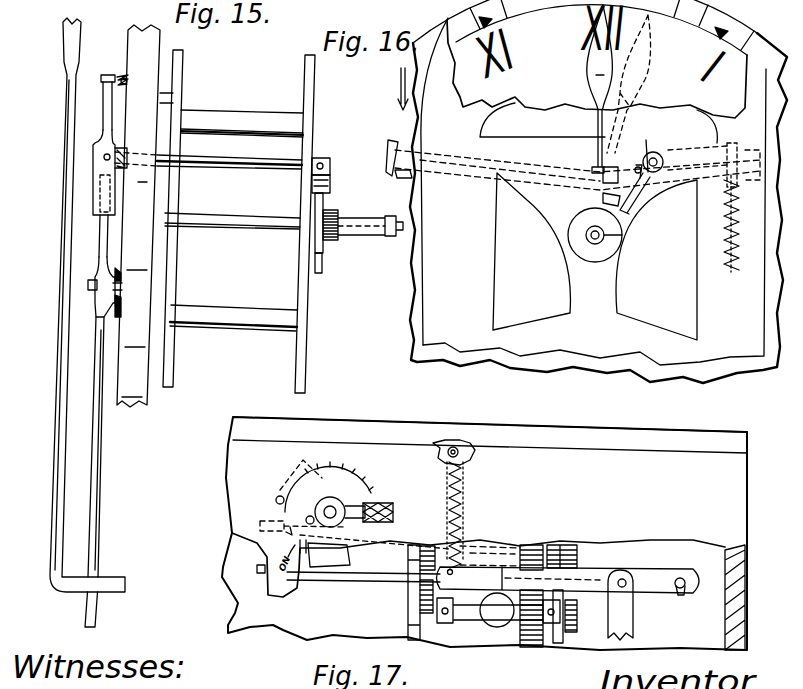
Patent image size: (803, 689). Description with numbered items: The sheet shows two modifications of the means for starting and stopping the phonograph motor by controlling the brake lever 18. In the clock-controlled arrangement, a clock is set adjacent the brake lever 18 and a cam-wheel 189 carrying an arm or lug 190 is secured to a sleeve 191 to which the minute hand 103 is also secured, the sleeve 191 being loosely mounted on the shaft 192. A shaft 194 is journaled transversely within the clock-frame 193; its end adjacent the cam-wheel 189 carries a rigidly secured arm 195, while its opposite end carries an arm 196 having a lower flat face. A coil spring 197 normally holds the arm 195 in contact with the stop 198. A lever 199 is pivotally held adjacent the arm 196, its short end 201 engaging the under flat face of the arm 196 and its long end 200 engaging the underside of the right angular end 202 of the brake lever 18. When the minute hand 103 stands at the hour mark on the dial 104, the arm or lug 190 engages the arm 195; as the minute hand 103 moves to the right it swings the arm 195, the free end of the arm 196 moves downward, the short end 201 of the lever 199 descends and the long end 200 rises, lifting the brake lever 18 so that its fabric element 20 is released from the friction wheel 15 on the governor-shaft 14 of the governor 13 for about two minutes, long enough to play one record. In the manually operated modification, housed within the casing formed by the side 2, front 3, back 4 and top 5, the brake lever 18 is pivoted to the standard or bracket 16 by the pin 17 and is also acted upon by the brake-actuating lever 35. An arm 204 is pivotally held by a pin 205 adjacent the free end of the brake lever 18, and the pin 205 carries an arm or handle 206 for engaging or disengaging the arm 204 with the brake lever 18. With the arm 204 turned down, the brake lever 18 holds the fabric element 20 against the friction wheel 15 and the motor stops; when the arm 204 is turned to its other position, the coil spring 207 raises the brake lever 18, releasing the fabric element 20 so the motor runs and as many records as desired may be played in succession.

In FIG. 15, the brake lever 18 is at (56, 373).
In FIG. 17, the brake lever 18 is at (484, 580).
In FIG. 15, the coil spring 197 is at (121, 75).
In FIG. 15, the arm 196 is at (105, 163).
In FIG. 15, the short end 201 is at (100, 236).
In FIG. 15, the lever 199 is at (95, 293).
In FIG. 15, the long end 200 is at (93, 494).
In FIG. 15, the right angular end 202 is at (114, 590).
In FIG. 16, the right angular end 202 is at (400, 168).
In FIG. 15, the shaft 194 is at (219, 161).
In FIG. 16, the shaft 194 is at (661, 154).
In FIG. 15, the shaft 192 is at (235, 219).
In FIG. 16, the shaft 192 is at (568, 235).
In FIG. 15, the clock-frame 193 is at (303, 290).
In FIG. 15, the arm 195 is at (330, 176).
In FIG. 16, the arm 195 is at (636, 197).
In FIG. 15, the stop 198 is at (329, 189).
In FIG. 16, the stop 198 is at (633, 172).
In FIG. 15, the cam-wheel 189 is at (322, 237).
In FIG. 16, the cam-wheel 189 is at (596, 263).
In FIG. 15, the sleeve 191 is at (386, 238).
In FIG. 16, the sleeve 191 is at (623, 235).
In FIG. 15, the arm or lug 190 is at (323, 268).
In FIG. 16, the arm or lug 190 is at (613, 199).
In FIG. 16, the minute hand 103 is at (598, 84).
In FIG. 16, the dial 104 is at (646, 99).
In FIG. 17, the coil spring 207 is at (457, 545).
In FIG. 17, the pin 205 is at (336, 502).
In FIG. 17, the arm or handle 206 is at (383, 505).
In FIG. 17, the arm 204 is at (332, 560).
In FIG. 17, the fabric element 20 is at (572, 548).
In FIG. 17, the friction wheel 15 is at (558, 638).
In FIG. 17, the governor-shaft 14 is at (432, 613).
In FIG. 17, the governor 13 is at (496, 613).
In FIG. 17, the standard or bracket 16 is at (627, 620).
In FIG. 17, the pin 17 is at (623, 579).
In FIG. 17, the brake-actuating lever 35 is at (681, 590).
In FIG. 17, the back 4 is at (712, 562).
In FIG. 17, the side 2 is at (735, 600).
In FIG. 17, the front 3 is at (490, 469).
In FIG. 17, the top 5 is at (632, 442).